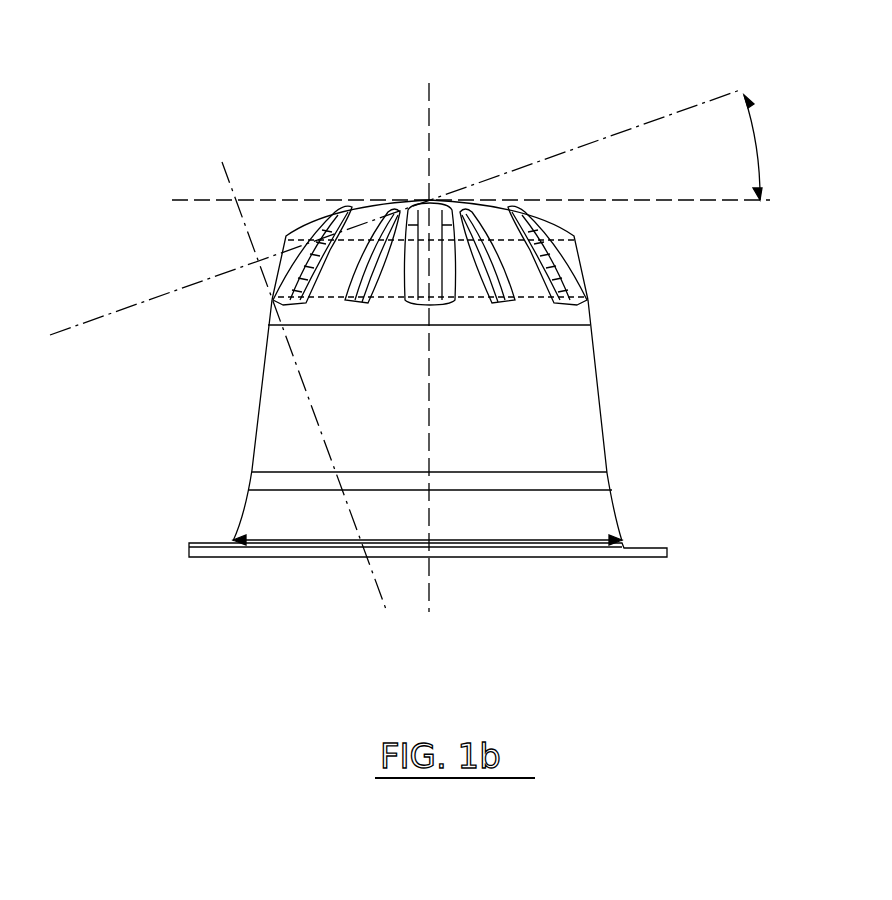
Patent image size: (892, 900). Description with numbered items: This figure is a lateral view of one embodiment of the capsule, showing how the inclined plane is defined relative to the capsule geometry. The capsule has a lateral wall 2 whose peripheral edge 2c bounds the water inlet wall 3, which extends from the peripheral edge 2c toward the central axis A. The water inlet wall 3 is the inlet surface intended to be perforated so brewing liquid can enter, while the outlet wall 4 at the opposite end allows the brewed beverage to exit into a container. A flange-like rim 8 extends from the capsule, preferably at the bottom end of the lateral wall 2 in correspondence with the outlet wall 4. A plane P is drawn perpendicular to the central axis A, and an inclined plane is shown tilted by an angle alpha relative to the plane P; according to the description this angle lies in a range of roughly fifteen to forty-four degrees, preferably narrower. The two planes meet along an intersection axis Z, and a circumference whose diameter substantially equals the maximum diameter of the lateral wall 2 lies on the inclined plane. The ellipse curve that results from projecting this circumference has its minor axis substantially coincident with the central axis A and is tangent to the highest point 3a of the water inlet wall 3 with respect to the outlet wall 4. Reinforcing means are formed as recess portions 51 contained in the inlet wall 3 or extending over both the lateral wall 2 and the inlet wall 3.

The lateral wall 2 is at (578, 398).
The peripheral edge 2c is at (565, 237).
The water inlet wall 3 is at (360, 203).
The highest point of the inlet wall 3a is at (472, 190).
The recess portion 51 is at (555, 306).
The flange-like rim 8 is at (668, 555).
The outlet wall 4 is at (527, 574).
The central axis A is at (429, 90).
The intersection axis Z is at (427, 198).
The plane P is at (770, 200).